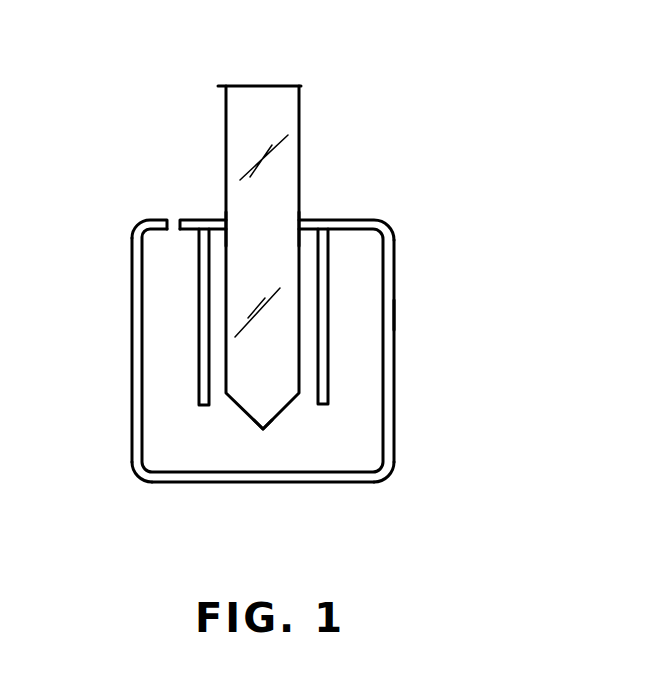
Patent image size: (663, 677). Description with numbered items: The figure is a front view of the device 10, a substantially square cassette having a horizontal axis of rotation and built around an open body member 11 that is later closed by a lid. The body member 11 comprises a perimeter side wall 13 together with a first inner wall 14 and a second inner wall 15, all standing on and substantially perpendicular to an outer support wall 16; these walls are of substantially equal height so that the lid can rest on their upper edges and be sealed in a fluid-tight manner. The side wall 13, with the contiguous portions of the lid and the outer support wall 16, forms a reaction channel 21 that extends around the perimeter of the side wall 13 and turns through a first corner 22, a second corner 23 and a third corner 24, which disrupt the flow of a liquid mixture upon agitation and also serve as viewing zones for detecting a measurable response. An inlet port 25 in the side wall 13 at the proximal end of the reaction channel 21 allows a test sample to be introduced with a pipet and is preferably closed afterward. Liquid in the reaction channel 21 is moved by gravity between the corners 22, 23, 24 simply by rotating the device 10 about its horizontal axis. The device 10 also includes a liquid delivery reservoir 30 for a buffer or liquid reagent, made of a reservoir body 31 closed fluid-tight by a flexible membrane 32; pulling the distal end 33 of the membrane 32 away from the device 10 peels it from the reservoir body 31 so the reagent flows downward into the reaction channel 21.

The device 10 is at (497, 330).
The body member 11 is at (394, 336).
The side wall 13 is at (388, 423).
The first inner wall 14 is at (205, 410).
The second inner wall 15 is at (325, 407).
The outer support wall 16 is at (366, 293).
The reaction channel 21 is at (161, 327).
The first corner 22 is at (160, 458).
The second corner 23 is at (370, 452).
The third corner 24 is at (368, 248).
The inlet port 25 is at (170, 216).
The liquid delivery reservoir 30 is at (265, 432).
The reservoir body 31 is at (300, 243).
The membrane 32 is at (280, 163).
The distal end 33 is at (283, 98).